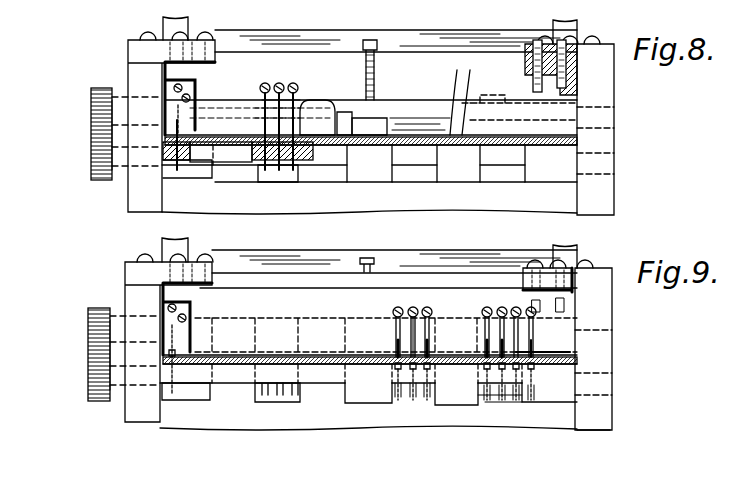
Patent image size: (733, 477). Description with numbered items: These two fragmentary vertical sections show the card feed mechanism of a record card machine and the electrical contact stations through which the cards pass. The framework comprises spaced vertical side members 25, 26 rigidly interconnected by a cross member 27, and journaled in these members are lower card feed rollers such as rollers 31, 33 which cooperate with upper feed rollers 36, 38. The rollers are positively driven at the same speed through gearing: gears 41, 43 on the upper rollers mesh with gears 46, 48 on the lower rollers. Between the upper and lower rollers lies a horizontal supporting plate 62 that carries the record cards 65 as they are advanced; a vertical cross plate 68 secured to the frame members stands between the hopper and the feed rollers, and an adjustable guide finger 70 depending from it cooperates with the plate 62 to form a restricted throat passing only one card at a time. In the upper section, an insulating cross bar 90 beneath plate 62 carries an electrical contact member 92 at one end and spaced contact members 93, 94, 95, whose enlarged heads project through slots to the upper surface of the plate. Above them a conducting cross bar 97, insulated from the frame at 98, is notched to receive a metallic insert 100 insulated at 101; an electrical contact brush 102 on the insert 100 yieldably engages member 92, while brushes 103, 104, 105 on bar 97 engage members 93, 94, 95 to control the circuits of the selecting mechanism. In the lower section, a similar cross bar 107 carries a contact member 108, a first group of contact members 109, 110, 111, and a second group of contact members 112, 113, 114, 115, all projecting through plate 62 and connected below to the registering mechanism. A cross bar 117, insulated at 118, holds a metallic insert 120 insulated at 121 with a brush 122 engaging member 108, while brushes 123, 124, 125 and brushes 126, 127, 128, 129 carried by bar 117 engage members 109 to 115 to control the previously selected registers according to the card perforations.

In FIG. 8, the vertical side member 25 is at (143, 182).
In FIG. 9, the vertical side member 25 is at (140, 306).
In FIG. 8, the vertical side member 26 is at (602, 101).
In FIG. 9, the vertical side member 26 is at (600, 304).
In FIG. 8, the cross member 27 is at (550, 212).
In FIG. 9, the cross member 27 is at (536, 430).
In FIG. 8, the lower card feed roller 31 is at (458, 175).
In FIG. 9, the lower card feed roller 33 is at (480, 425).
In FIG. 8, the upper card feed roller 36 is at (453, 120).
In FIG. 9, the upper card feed roller 38 is at (440, 314).
In FIG. 8, the gear 41 is at (100, 98).
In FIG. 9, the gear 43 is at (100, 325).
In FIG. 8, the gear 46 is at (100, 156).
In FIG. 9, the gear 48 is at (100, 375).
In FIG. 8, the horizontal supporting plate 62 is at (368, 172).
In FIG. 9, the horizontal supporting plate 62 is at (351, 375).
In FIG. 9, the record cards 65 is at (332, 260).
In FIG. 8, the vertical cross plate 68 is at (407, 67).
In FIG. 9, the vertical cross plate 68 is at (400, 270).
In FIG. 8, the adjustable guide finger 70 is at (370, 124).
In FIG. 8, the cross bar 90 is at (224, 163).
In FIG. 8, the electrical contact member 92 is at (180, 170).
In FIG. 8, the electrical contact member 93 is at (266, 170).
In FIG. 9, the electrical contact member 93 is at (265, 395).
In FIG. 8, the electrical contact member 94 is at (281, 172).
In FIG. 9, the electrical contact member 94 is at (280, 395).
In FIG. 8, the electrical contact member 95 is at (296, 172).
In FIG. 9, the electrical contact member 95 is at (295, 395).
In FIG. 8, the cross bar 97 is at (312, 100).
In FIG. 8, the insulation 98 is at (218, 52).
In FIG. 8, the metallic insert 100 is at (167, 85).
In FIG. 8, the insulation 101 is at (184, 92).
In FIG. 8, the electrical contact brush 102 is at (176, 124).
In FIG. 8, the electrical contact brush 103 is at (262, 118).
In FIG. 8, the electrical contact brush 104 is at (262, 112).
In FIG. 8, the electrical contact brush 105 is at (302, 108).
In FIG. 9, the cross bar 107 is at (466, 404).
In FIG. 9, the electrical contact member 108 is at (185, 392).
In FIG. 9, the electrical contact member 109 is at (398, 400).
In FIG. 9, the electrical contact member 110 is at (413, 398).
In FIG. 9, the electrical contact member 111 is at (427, 398).
In FIG. 9, the electrical contact member 112 is at (470, 393).
In FIG. 9, the electrical contact member 113 is at (505, 386).
In FIG. 9, the electrical contact member 114 is at (523, 398).
In FIG. 9, the electrical contact member 115 is at (520, 400).
In FIG. 9, the cross bar 117 is at (423, 300).
In FIG. 9, the insulation 118 is at (214, 264).
In FIG. 9, the metallic insert 120 is at (165, 304).
In FIG. 9, the insulation 121 is at (200, 297).
In FIG. 9, the electrical contact brush 122 is at (190, 344).
In FIG. 9, the electrical contact brush 123 is at (398, 350).
In FIG. 9, the electrical contact brush 124 is at (398, 342).
In FIG. 9, the electrical contact brush 125 is at (430, 348).
In FIG. 9, the electrical contact brush 126 is at (488, 346).
In FIG. 9, the electrical contact brush 127 is at (503, 348).
In FIG. 9, the electrical contact brush 128 is at (517, 352).
In FIG. 9, the electrical contact brush 129 is at (532, 356).